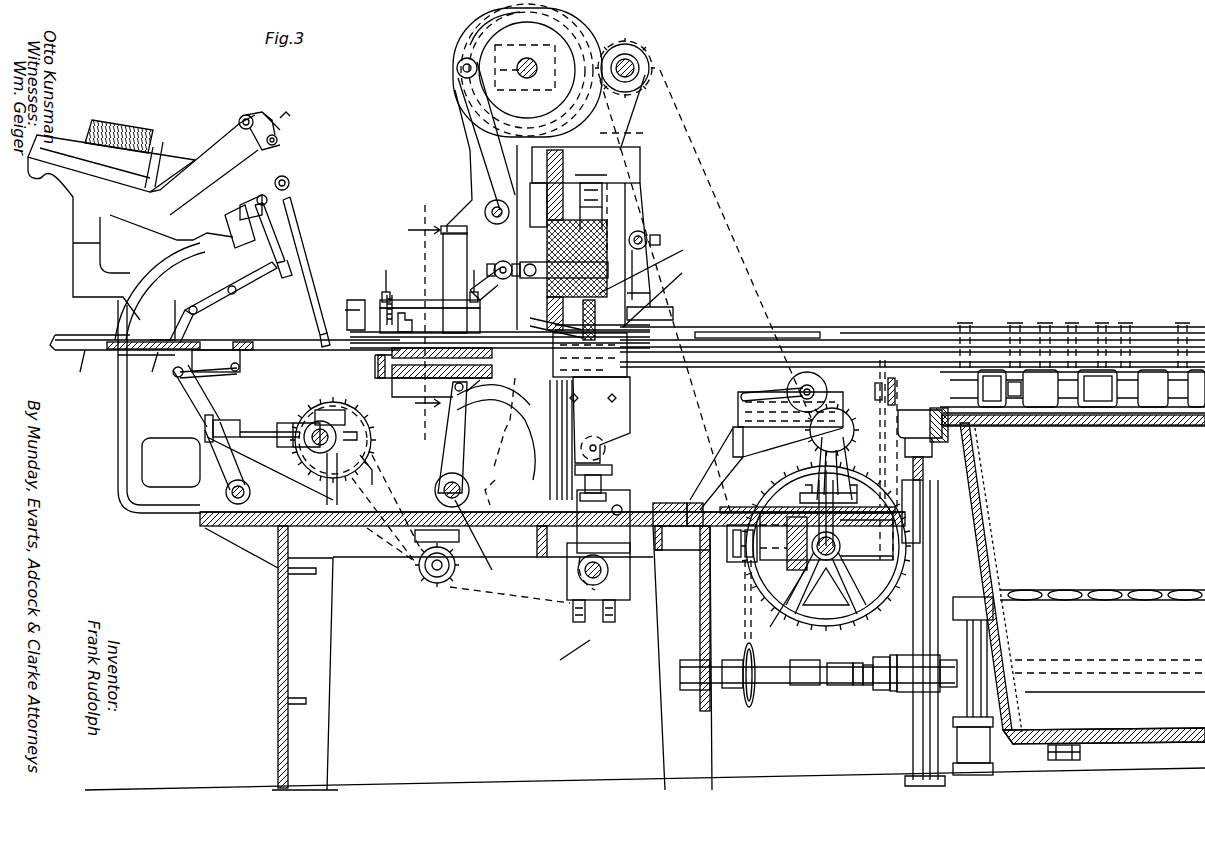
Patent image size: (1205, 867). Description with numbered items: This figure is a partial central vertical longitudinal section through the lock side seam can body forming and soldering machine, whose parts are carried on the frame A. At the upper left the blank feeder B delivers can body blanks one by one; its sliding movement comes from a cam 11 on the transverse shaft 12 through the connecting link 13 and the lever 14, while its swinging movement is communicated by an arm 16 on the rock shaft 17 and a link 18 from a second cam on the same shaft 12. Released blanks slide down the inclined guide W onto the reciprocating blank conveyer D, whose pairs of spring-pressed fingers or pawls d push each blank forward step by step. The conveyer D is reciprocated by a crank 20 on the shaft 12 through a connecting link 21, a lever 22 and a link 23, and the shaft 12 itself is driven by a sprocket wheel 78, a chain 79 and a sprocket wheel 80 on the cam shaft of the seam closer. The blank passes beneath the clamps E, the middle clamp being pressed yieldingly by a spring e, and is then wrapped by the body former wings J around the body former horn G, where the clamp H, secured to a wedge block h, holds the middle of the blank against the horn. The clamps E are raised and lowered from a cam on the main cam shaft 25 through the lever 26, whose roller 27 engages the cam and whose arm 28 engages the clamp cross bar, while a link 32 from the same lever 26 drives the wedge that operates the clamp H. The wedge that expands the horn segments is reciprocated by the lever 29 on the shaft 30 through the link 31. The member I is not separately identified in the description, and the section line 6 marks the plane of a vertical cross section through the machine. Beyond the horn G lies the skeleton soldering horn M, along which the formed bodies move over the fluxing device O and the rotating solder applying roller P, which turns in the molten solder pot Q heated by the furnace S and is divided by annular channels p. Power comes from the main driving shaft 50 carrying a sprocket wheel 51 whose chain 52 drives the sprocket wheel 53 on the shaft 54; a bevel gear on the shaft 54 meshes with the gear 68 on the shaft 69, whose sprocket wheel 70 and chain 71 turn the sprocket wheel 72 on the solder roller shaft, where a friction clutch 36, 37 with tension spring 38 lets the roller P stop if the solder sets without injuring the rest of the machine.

The frame of the machine A is at (278, 655).
The blank feed device B is at (212, 148).
The lever 14 is at (262, 115).
The arm 16 is at (262, 195).
The rock shaft 17 is at (286, 187).
The link 18 is at (292, 235).
The connecting link 13 is at (312, 292).
The inclined guide W is at (223, 302).
The reciprocating blank conveyer D is at (58, 340).
The fingers or pawls d is at (113, 368).
The lever 22 is at (184, 398).
The link 23 is at (457, 48).
The connecting link 21 is at (236, 425).
The crank 20 is at (305, 433).
The sprocket wheel 78 is at (319, 402).
The transverse shaft 12 is at (366, 455).
The cam 11 is at (366, 475).
The clamps E is at (420, 300).
The spring e is at (385, 290).
The section line 6 is at (424, 319).
The arm 28 is at (453, 226).
The link 32 is at (495, 266).
The wedge block h is at (577, 240).
The clamp H is at (633, 337).
The body former horn G is at (590, 356).
The main cam shaft 25 is at (530, 82).
The roller 27 is at (457, 75).
The connecting lever 26 is at (474, 150).
The main driving shaft 50 is at (652, 70).
The sprocket wheel 51 is at (648, 58).
The chain 52 is at (736, 208).
The body formers J is at (645, 120).
The lever 29 is at (448, 452).
The connecting link 31 is at (478, 400).
The slide I is at (630, 385).
The sprocket wheel 80 is at (570, 656).
The shaft 30 is at (470, 520).
The chain 79 is at (456, 600).
The shaft 54 is at (826, 546).
The sprocket wheel 70 is at (745, 560).
The shaft 69 is at (790, 551).
The gear 68 is at (788, 607).
The chain 71 is at (735, 603).
The sprocket wheel 72 is at (748, 708).
The tension spring 38 is at (840, 662).
The friction clutch member 37 is at (876, 660).
The friction clutch member 36 is at (866, 688).
The sprocket wheel 53 is at (774, 451).
The fluxing device O is at (778, 420).
The soldering horn M is at (1108, 327).
The solder applying roller P is at (1113, 408).
The transverse annular channels p is at (1070, 387).
The solder pot Q is at (1062, 426).
The furnace or heater S is at (1102, 618).